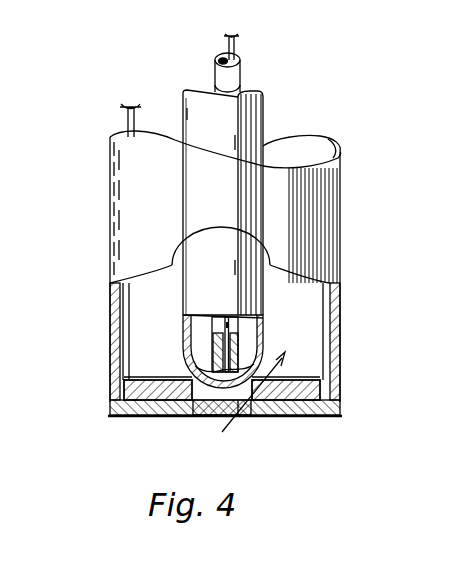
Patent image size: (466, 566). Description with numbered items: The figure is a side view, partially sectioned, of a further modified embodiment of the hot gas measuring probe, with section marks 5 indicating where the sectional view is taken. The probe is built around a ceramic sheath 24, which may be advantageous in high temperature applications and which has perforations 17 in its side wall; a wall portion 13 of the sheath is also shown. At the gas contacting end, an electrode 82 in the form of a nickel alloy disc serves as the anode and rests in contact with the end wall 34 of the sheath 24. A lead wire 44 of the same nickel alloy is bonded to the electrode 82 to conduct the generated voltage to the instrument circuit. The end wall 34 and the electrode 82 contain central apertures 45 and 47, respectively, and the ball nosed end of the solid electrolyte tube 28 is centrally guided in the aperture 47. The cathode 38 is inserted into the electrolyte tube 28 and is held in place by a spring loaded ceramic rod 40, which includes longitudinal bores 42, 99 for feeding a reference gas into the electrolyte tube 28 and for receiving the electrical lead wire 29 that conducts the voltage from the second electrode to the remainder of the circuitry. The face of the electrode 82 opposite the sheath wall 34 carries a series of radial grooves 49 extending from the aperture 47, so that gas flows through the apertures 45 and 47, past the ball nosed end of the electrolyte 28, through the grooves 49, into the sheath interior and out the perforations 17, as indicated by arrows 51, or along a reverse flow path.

The sheath 24 is at (300, 207).
The wall 13 is at (150, 282).
The perforations 17 is at (228, 228).
The ceramic rod 40 is at (218, 79).
The longitudinal bore 42 is at (217, 63).
The longitudinal bore 99 is at (240, 58).
The electrical lead wire 29 is at (237, 37).
The lead wire 44 is at (124, 118).
The electrolyte tube 28 is at (265, 339).
The cathode 38 is at (212, 366).
The radial grooves 49 is at (125, 383).
The electrode 82 is at (300, 400).
The end wall 34 is at (142, 418).
The central aperture 45 is at (206, 401).
The central aperture 47 is at (243, 383).
The arrows 51 is at (240, 398).
The section line 5 is at (91, 350).